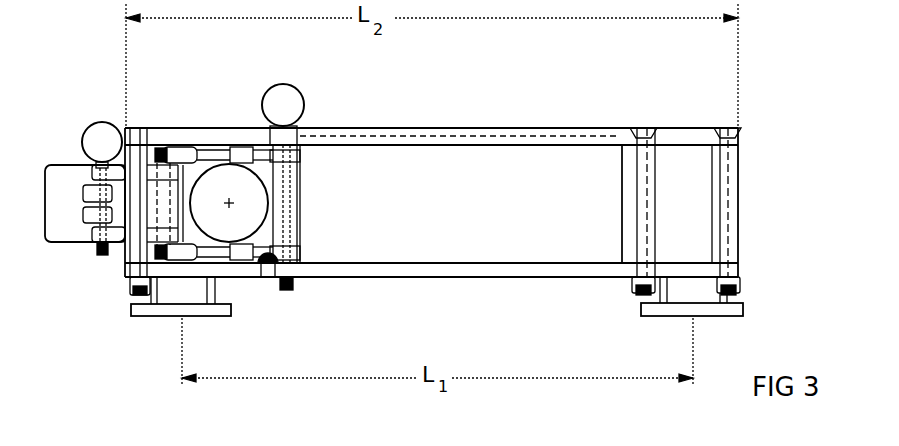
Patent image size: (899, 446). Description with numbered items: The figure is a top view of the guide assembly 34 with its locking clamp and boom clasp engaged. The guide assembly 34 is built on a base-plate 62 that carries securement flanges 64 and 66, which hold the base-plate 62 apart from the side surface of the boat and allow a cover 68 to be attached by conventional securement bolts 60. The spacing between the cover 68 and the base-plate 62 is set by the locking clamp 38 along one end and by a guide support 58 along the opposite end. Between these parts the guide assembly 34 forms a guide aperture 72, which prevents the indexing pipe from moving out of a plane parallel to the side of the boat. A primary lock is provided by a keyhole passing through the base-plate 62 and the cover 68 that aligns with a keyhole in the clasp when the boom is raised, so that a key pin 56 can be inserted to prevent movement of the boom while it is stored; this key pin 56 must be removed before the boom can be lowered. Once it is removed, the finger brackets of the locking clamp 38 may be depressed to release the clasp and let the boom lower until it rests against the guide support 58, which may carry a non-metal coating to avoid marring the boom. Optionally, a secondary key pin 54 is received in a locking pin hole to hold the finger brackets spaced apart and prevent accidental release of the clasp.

The guide assembly 34 is at (757, 127).
The locking clamp 38 is at (260, 268).
The key pin 54 is at (100, 121).
The key pin 56 is at (305, 100).
The guide support 58 is at (740, 182).
The securement bolts 60 is at (735, 283).
The base-plate 62 is at (127, 272).
The securement flange 64 is at (133, 317).
The securement flange 66 is at (642, 315).
The cover 68 is at (457, 127).
The guide aperture 72 is at (570, 193).